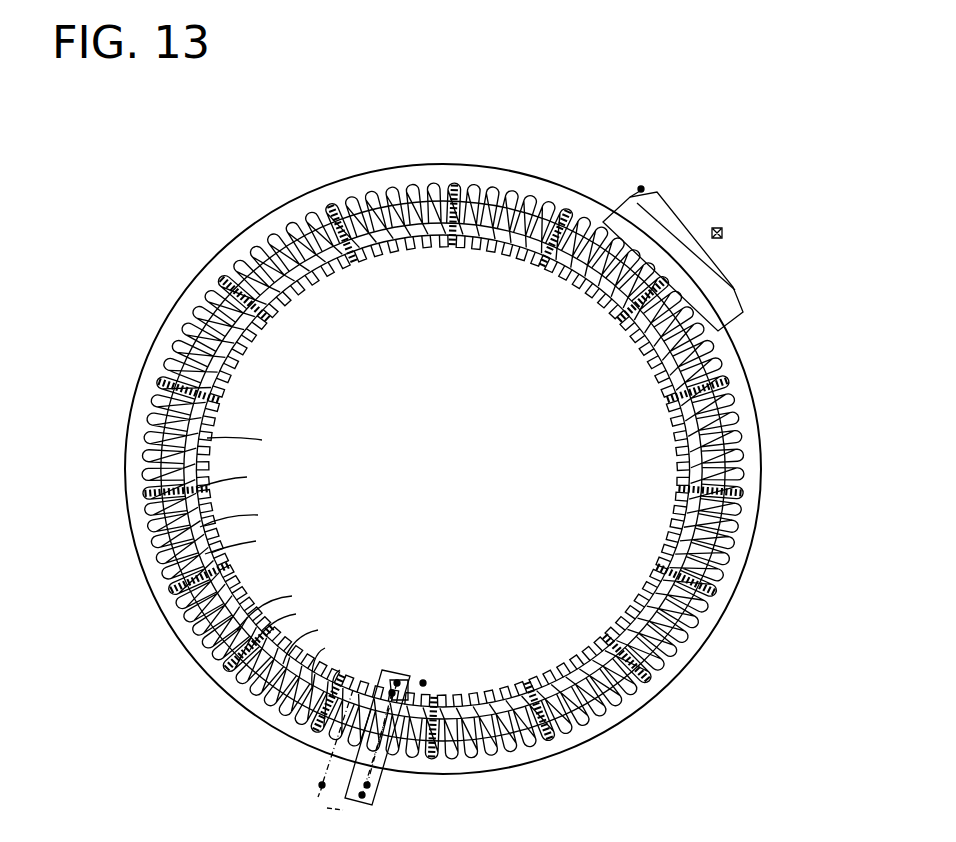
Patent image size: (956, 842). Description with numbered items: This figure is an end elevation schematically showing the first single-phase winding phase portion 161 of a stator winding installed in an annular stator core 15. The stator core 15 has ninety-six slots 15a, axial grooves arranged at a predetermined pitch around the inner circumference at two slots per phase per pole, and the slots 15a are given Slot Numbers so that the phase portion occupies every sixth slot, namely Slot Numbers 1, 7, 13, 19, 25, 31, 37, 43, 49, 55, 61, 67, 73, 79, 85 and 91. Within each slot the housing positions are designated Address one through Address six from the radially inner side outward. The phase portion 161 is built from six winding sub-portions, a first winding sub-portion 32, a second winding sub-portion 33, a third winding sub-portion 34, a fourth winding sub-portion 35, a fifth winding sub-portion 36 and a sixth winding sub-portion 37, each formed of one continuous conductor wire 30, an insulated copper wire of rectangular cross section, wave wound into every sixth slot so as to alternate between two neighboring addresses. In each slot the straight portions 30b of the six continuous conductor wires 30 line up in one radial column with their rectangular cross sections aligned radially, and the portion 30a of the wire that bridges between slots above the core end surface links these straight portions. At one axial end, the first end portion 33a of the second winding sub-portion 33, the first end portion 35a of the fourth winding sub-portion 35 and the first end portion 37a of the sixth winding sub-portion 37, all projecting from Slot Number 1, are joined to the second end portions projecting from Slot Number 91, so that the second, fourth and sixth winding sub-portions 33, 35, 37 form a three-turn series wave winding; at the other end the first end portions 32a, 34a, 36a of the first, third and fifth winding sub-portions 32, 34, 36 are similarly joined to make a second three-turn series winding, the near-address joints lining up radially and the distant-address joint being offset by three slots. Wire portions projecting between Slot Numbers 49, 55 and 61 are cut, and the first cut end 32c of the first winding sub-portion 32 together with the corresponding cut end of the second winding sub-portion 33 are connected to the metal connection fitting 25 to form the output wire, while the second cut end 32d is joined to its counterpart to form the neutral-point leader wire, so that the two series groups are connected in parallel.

The stator core 15 is at (286, 213).
The slot 15a is at (273, 262).
The Slot Number 1 is at (335, 701).
The Slot Number 7 is at (252, 648).
The Slot Number 13 is at (208, 579).
The Slot Number 19 is at (185, 492).
The metal connection fitting 25 is at (742, 258).
The Slot Number 31 is at (263, 310).
The sixth winding sub-portion 37 is at (222, 607).
The Slot Number 43 is at (451, 229).
The Slot Number 49 is at (544, 252).
The Slot Number 55 is at (632, 311).
The Slot Number 61 is at (688, 401).
The Slot Number 67 is at (701, 495).
The Slot Number 73 is at (678, 581).
The Slot Number 79 is at (617, 656).
The Slot Number 85 is at (530, 708).
The Slot Number 91 is at (436, 726).
The first single-phase winding phase portion 161 is at (258, 441).
The continuous conductor wire 30 is at (244, 519).
The conductor segment in-slot portion 30a is at (252, 544).
The straight portion 30b is at (244, 475).
The first winding sub-portion 32 is at (351, 677).
The second winding sub-portion 33 is at (288, 628).
The third winding sub-portion 34 is at (334, 662).
The fourth winding sub-portion 35 is at (280, 608).
The fifth winding sub-portion 36 is at (316, 642).
The first end portion of the first winding sub-portion 32a is at (367, 786).
The first end portion of the second winding sub-portion 33a is at (423, 683).
The first end portion of the third winding sub-portion 34a is at (363, 797).
The first end portion of the fourth winding sub-portion 35a is at (403, 690).
The first end portion of the fifth winding sub-portion 36a is at (285, 804).
The first end portion of the sixth winding sub-portion 37a is at (394, 683).
The first cut end of the first winding sub-portion 32c is at (727, 224).
The second cut end of the first winding sub-portion 32d is at (643, 187).